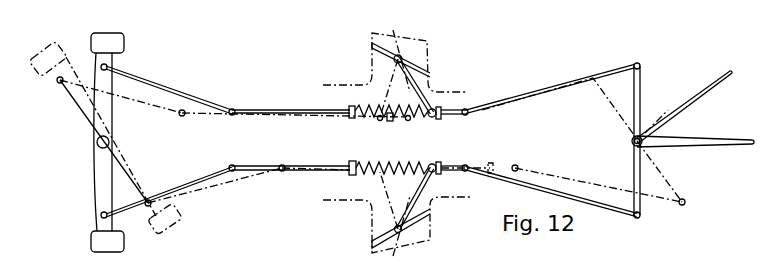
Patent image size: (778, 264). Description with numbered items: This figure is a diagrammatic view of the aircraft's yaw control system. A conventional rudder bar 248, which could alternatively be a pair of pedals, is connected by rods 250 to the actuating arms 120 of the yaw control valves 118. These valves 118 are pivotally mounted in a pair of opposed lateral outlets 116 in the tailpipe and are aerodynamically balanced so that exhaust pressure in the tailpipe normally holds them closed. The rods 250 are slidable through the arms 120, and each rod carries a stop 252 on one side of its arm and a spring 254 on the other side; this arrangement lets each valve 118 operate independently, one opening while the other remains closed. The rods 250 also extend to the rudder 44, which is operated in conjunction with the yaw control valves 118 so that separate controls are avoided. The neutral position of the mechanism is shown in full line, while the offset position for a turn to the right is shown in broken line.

The rudder 44 is at (717, 145).
The lateral outlets 116 is at (430, 47).
The yaw control valves 118 is at (373, 53).
The actuating arms 120 is at (418, 88).
The rudder bar 248 is at (100, 173).
The rods 250 is at (287, 108).
The stop 252 is at (442, 118).
The spring 254 is at (363, 120).